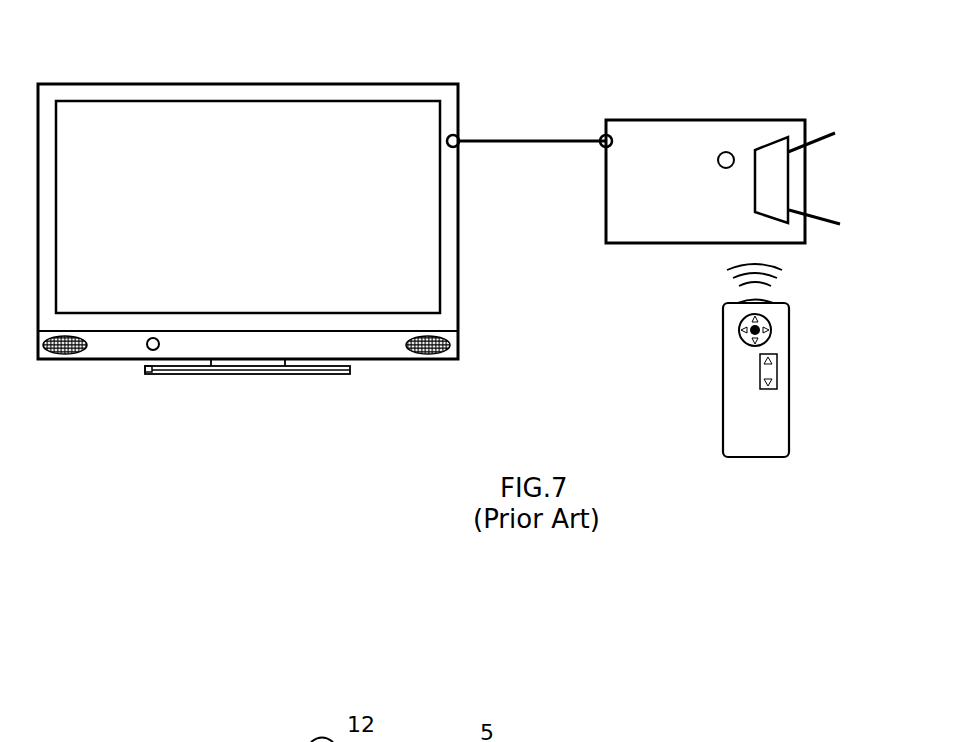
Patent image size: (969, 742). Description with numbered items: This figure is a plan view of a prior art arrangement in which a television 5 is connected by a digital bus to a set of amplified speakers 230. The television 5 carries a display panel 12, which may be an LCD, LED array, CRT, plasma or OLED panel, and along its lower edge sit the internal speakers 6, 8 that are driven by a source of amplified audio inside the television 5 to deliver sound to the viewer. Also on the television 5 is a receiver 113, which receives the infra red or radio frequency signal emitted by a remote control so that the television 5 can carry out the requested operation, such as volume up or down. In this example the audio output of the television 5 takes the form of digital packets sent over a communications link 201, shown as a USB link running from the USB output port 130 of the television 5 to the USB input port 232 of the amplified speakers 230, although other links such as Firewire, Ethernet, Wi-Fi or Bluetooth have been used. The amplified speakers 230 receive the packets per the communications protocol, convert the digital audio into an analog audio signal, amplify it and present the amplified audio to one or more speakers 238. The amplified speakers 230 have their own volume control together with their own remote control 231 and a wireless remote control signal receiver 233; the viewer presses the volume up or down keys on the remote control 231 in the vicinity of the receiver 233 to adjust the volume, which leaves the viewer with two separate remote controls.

The television 5 is at (496, 64).
The display panel 12 is at (260, 125).
The internal speaker 6 is at (73, 350).
The internal speaker 8 is at (432, 348).
The receiver 113 is at (150, 352).
The USB output port 130 is at (458, 139).
The communications link 201 is at (523, 142).
The USB input port 232 is at (607, 135).
The amplified speakers 230 is at (770, 120).
The wireless remote control signal receiver 233 is at (725, 152).
The speaker 238 is at (778, 168).
The remote control 231 is at (789, 413).